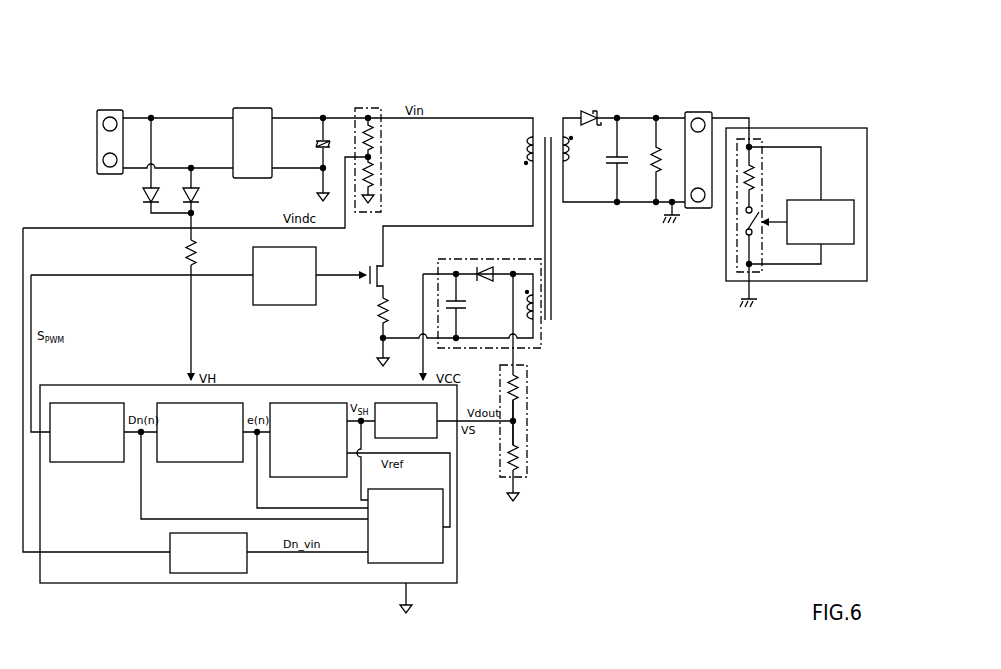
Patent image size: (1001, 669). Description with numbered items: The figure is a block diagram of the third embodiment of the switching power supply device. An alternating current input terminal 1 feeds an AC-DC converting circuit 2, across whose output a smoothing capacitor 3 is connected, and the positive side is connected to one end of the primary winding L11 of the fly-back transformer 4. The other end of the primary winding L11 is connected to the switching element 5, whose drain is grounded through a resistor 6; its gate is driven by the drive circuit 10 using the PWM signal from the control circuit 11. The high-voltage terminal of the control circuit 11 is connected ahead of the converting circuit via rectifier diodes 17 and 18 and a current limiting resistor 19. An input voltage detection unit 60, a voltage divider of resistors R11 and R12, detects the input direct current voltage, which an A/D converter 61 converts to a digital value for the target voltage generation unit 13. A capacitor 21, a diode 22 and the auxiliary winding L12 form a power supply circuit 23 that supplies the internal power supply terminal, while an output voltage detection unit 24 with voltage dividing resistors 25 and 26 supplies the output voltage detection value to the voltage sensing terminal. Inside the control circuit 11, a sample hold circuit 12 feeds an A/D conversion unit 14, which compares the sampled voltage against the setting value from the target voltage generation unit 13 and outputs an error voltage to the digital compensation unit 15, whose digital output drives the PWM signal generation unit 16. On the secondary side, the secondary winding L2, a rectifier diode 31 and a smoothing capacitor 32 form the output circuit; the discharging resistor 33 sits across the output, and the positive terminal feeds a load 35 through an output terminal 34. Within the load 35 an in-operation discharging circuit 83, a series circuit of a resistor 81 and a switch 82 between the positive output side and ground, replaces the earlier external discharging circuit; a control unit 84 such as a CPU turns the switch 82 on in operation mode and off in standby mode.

The alternating current input terminal 1 is at (110, 110).
The AC-DC converting circuit 2 is at (252, 108).
The smoothing capacitor 3 is at (321, 140).
The input voltage detection unit 60 is at (393, 141).
The rectifier diode 17 is at (143, 196).
The rectifier diode 18 is at (199, 196).
The current limiting resistor 19 is at (186, 250).
The drive circuit 10 is at (253, 287).
The control circuit 11 is at (267, 462).
The A/D conversion unit 14 is at (303, 403).
The switching element 5 is at (369, 264).
The resistor 6 is at (378, 310).
The fly-back transformer 4 is at (539, 200).
The diode 22 is at (485, 262).
The capacitor 21 is at (462, 312).
The power supply circuit 23 is at (516, 290).
The rectifier diode 31 is at (591, 110).
The smoothing capacitor 32 is at (620, 157).
The discharging resistor 33 is at (650, 165).
The output terminal 34 is at (699, 112).
The load 35 is at (775, 183).
The resistor 81 is at (752, 172).
The switch 82 is at (758, 235).
The in-operation discharging circuit 83 is at (745, 205).
The control unit 84 is at (840, 200).
The sample hold circuit 12 is at (402, 403).
The output voltage detection unit 24 is at (539, 421).
The voltage dividing resistor 25 is at (520, 382).
The voltage dividing resistor 26 is at (520, 454).
The PWM signal generation unit 16 is at (93, 462).
The digital compensation unit 15 is at (193, 462).
The A/D converter 61 is at (170, 545).
The target voltage generation unit 13 is at (443, 552).
The primary winding L11 is at (527, 148).
The secondary winding L2 is at (570, 152).
The auxiliary winding L12 is at (540, 299).
The resistor R11 is at (372, 135).
The resistor R12 is at (372, 172).